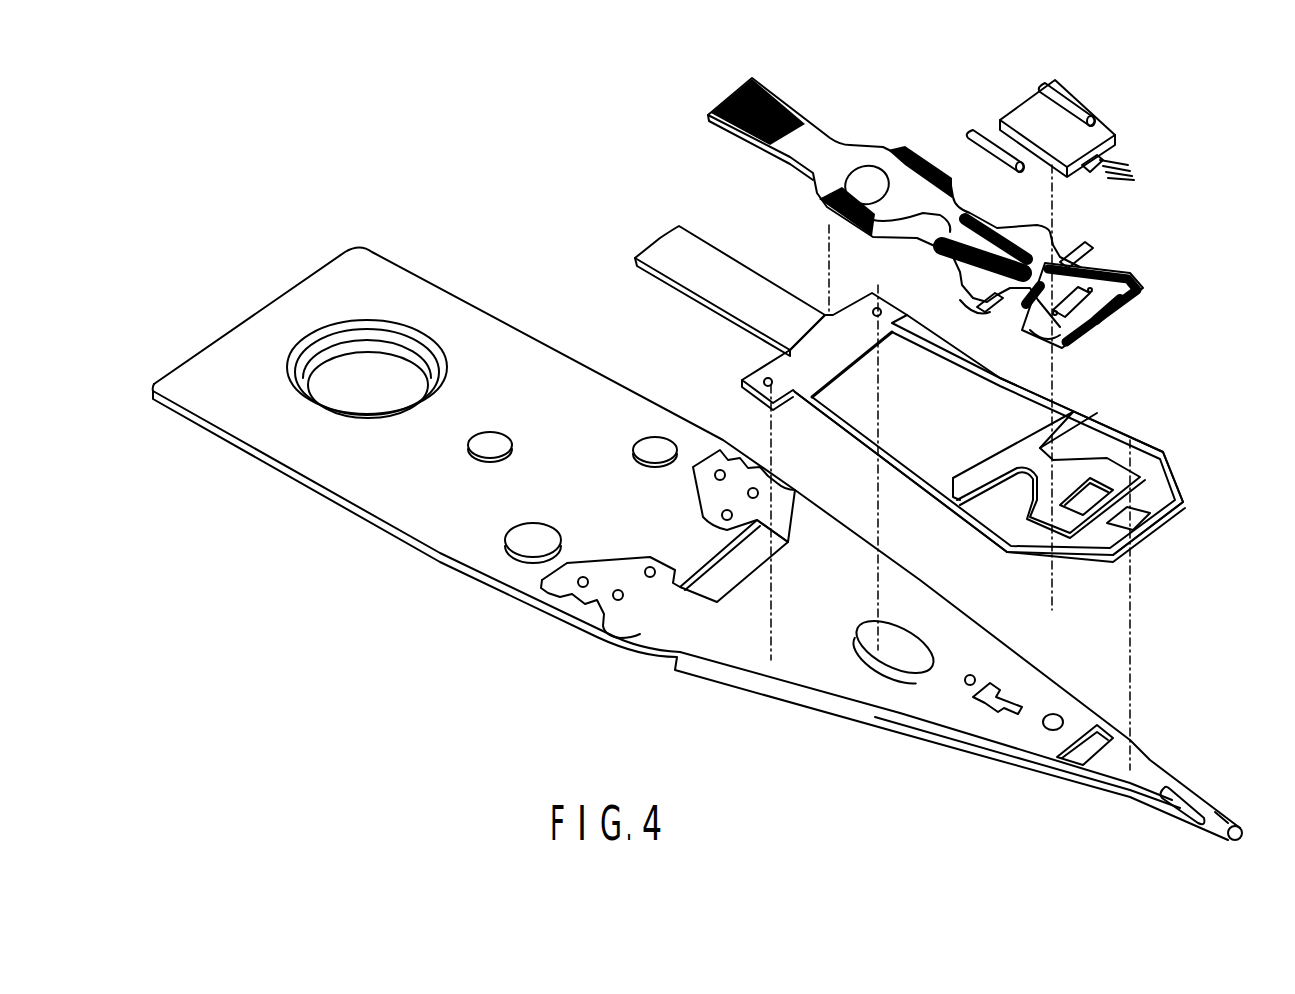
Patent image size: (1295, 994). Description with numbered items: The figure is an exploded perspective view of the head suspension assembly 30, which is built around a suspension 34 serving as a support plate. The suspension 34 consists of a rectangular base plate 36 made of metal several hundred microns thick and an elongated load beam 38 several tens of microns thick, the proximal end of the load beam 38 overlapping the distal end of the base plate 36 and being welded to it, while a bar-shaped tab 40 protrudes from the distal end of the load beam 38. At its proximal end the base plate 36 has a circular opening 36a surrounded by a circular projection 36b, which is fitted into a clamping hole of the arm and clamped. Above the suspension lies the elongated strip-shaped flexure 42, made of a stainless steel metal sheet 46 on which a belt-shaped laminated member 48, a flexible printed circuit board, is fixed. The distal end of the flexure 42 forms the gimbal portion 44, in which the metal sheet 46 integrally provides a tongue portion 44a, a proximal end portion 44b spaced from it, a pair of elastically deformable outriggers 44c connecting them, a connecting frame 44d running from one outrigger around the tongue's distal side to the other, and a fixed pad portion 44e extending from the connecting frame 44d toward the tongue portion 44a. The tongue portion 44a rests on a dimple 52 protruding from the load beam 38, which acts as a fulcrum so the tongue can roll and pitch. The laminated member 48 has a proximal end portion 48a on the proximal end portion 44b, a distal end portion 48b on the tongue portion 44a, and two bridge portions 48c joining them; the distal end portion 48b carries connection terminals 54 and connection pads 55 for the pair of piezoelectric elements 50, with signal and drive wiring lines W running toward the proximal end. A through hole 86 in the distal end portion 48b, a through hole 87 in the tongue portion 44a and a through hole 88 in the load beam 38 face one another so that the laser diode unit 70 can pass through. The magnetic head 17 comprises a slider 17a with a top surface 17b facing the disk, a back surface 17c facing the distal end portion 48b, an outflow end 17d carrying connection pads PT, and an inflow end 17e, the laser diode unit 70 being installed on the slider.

The head suspension assembly 30 is at (556, 212).
The suspension 34 is at (520, 622).
The base plate 36 is at (388, 488).
The circular opening 36a is at (386, 350).
The circular projection 36b is at (322, 353).
The load beam 38 is at (842, 685).
The tab 40 is at (1208, 812).
The flexure 42 is at (705, 75).
The gimbal portion 44 is at (996, 440).
The tongue portion 44a is at (1050, 515).
The proximal end portion 44b is at (833, 385).
The outriggers 44c is at (980, 370).
The connecting frame 44d is at (1170, 462).
The fixed pad portion 44e is at (1152, 525).
The metal sheet 46 is at (702, 265).
The laminated member 48 is at (929, 216).
The proximal end portion 48a is at (773, 135).
The distal end portion 48b is at (1100, 265).
The bridge portions 48c is at (898, 215).
The piezoelectric elements 50 is at (1082, 100).
The dimple 52 is at (1052, 731).
The connection terminals 54 is at (1112, 306).
The connection pads 55 is at (1062, 262).
The laser diode unit 70 is at (1089, 177).
The through hole 86 is at (1070, 312).
The through hole 87 is at (1085, 502).
The through hole 88 is at (1085, 750).
The magnetic head 17 is at (1064, 118).
The slider 17a is at (1090, 133).
The top surface 17b is at (1005, 120).
The back surface 17c is at (1045, 165).
The outflow end 17d is at (1118, 142).
The inflow end 17e is at (1018, 118).
The connection pads PT is at (1134, 176).
The wiring lines W is at (764, 107).